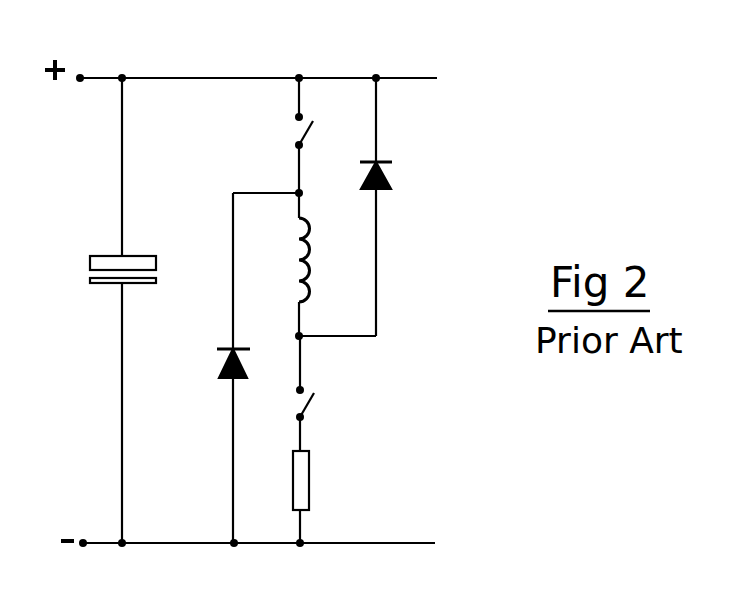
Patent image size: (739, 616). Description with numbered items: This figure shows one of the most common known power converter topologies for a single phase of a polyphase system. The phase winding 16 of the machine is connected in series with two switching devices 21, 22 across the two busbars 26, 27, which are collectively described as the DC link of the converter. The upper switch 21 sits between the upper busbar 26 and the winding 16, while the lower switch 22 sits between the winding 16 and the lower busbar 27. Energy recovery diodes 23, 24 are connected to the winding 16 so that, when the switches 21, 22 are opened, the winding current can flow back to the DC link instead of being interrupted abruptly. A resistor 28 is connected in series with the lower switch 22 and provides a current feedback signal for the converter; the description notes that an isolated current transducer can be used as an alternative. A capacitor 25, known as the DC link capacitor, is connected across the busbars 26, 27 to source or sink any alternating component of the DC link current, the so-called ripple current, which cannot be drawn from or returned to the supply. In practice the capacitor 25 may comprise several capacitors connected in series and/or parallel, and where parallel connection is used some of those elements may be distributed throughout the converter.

The phase winding 16 is at (318, 239).
The switching device 21 is at (294, 132).
The switching device 22 is at (318, 402).
The energy recovery diode 23 is at (397, 172).
The energy recovery diode 24 is at (215, 355).
The DC link capacitor 25 is at (85, 272).
The busbar 26 is at (205, 78).
The busbar 27 is at (185, 545).
The resistor 28 is at (311, 477).